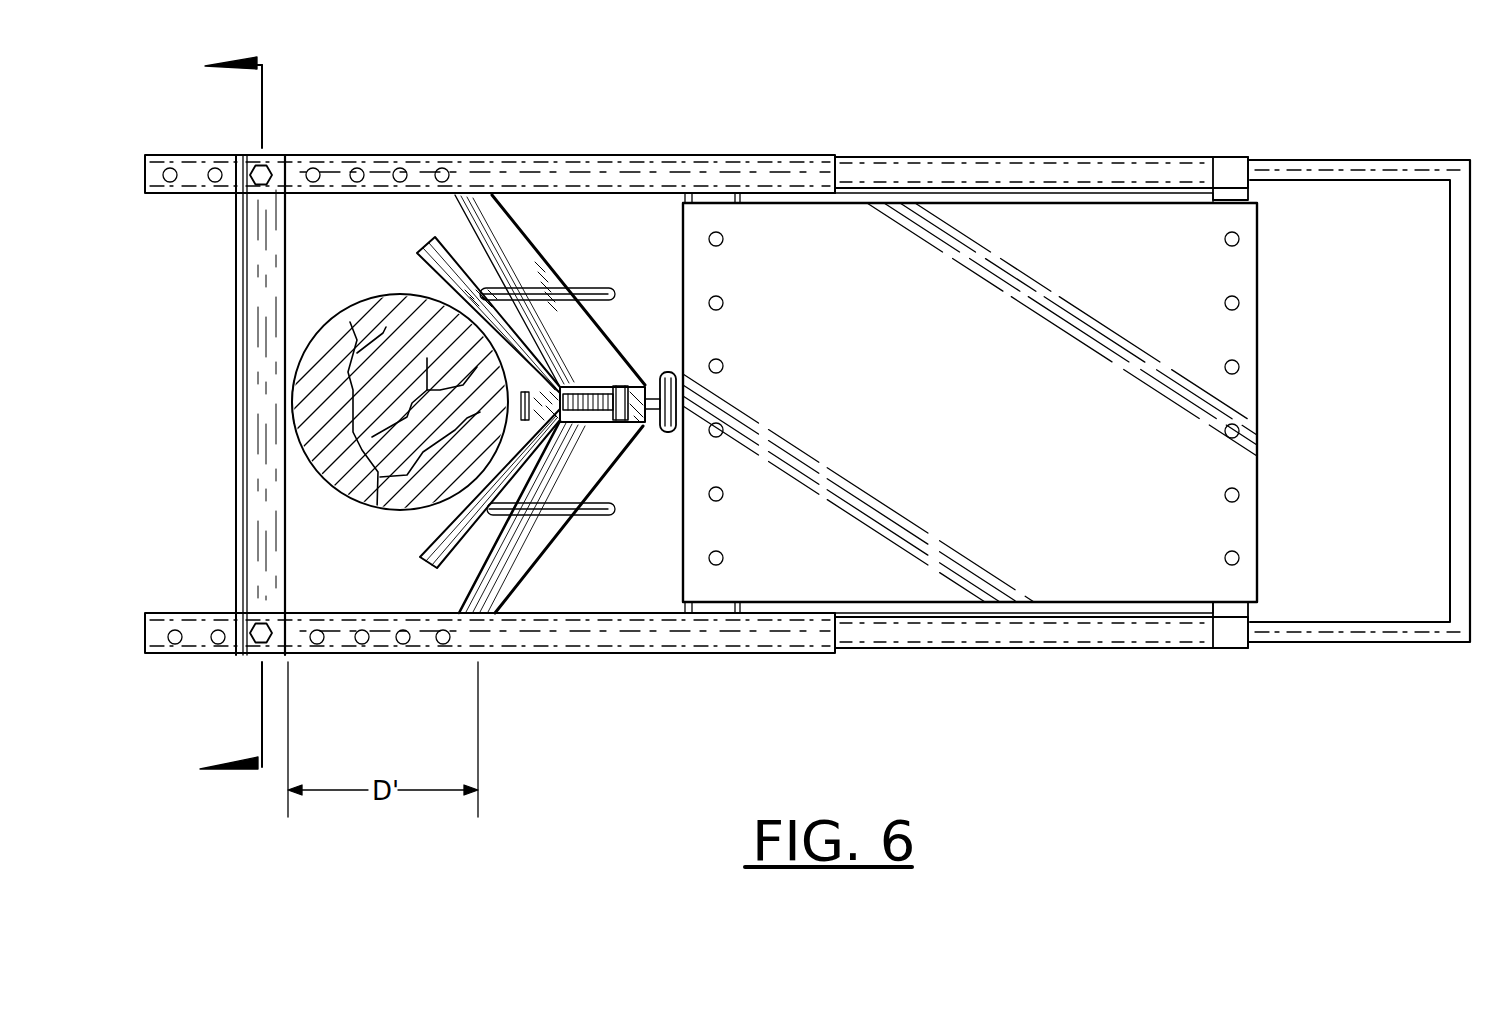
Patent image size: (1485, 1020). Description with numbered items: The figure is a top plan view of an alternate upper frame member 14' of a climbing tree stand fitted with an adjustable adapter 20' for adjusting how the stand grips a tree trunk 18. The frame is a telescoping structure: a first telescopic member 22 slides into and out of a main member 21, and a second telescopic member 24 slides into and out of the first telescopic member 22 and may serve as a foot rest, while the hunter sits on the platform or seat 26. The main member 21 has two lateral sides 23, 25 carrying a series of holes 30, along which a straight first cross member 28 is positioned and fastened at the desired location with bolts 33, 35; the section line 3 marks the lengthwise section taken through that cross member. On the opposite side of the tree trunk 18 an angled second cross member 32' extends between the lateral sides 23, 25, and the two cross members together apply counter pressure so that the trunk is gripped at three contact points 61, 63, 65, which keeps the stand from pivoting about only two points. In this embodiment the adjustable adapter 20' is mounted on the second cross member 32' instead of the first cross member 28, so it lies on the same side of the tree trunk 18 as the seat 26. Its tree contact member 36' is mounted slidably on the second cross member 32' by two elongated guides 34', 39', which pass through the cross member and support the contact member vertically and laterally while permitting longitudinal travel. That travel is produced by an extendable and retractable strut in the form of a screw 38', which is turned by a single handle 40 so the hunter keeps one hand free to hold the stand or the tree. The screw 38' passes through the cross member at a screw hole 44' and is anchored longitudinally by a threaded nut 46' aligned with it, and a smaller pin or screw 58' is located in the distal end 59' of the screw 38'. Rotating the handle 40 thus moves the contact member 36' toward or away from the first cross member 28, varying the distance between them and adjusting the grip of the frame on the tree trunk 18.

The section line 3- 3 is at (216, 419).
The upper frame member 14' is at (785, 113).
The tree trunk 18 is at (452, 405).
The adjustable adapter 20' is at (535, 362).
The main member 21 is at (812, 150).
The first telescopic member 22 is at (1000, 156).
The lateral side 23 is at (605, 655).
The second telescopic member 24 is at (1352, 160).
The lateral side 25 is at (557, 156).
The platform or seat 26 is at (1123, 203).
The first cross member 28 is at (236, 272).
The holes 30 is at (218, 167).
The second cross member 32' is at (550, 249).
The bolt 33 is at (260, 624).
The elongated guide 34' is at (547, 251).
The bolt 35 is at (258, 187).
The contact member 36' is at (459, 297).
The screw 38' is at (567, 517).
The elongated guide 39' is at (581, 528).
The handle 40 is at (670, 372).
The screw hole 44' is at (619, 448).
The threaded nut 46' is at (643, 430).
The smaller pin or screw 58' is at (581, 442).
The distal end 59' is at (619, 403).
The contact point 61 is at (478, 318).
The contact point 63 is at (485, 500).
The contact point 65 is at (293, 400).